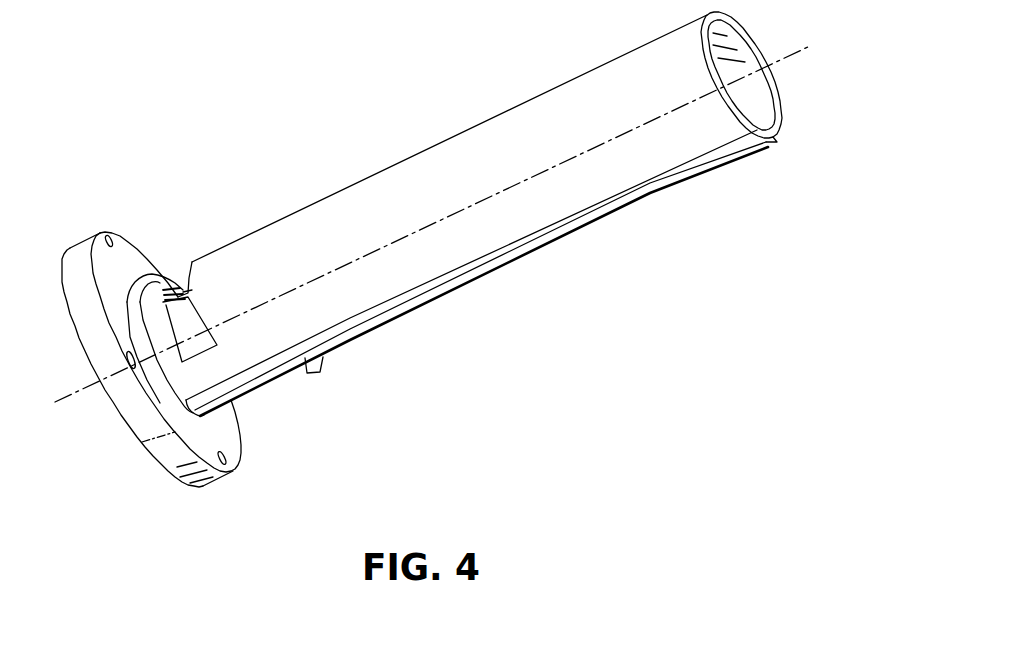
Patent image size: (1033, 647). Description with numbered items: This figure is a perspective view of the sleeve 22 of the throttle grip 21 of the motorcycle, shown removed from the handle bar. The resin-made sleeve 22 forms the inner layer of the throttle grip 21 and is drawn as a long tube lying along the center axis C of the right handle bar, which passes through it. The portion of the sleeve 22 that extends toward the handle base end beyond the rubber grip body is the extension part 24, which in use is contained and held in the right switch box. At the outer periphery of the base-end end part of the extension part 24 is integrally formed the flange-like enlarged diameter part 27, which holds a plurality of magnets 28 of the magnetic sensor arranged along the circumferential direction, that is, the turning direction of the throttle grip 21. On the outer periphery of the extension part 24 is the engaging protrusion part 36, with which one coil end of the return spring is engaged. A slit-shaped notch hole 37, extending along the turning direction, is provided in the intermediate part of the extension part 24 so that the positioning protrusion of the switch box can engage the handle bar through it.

The throttle grip 21 is at (480, 224).
The sleeve 22 is at (480, 224).
The extension part 24 is at (214, 257).
The enlarged diameter part 27 is at (133, 246).
The magnets 28 is at (113, 232).
The engaging protrusion part 36 is at (316, 373).
The notch hole 37 is at (183, 276).
The center axis C is at (790, 50).